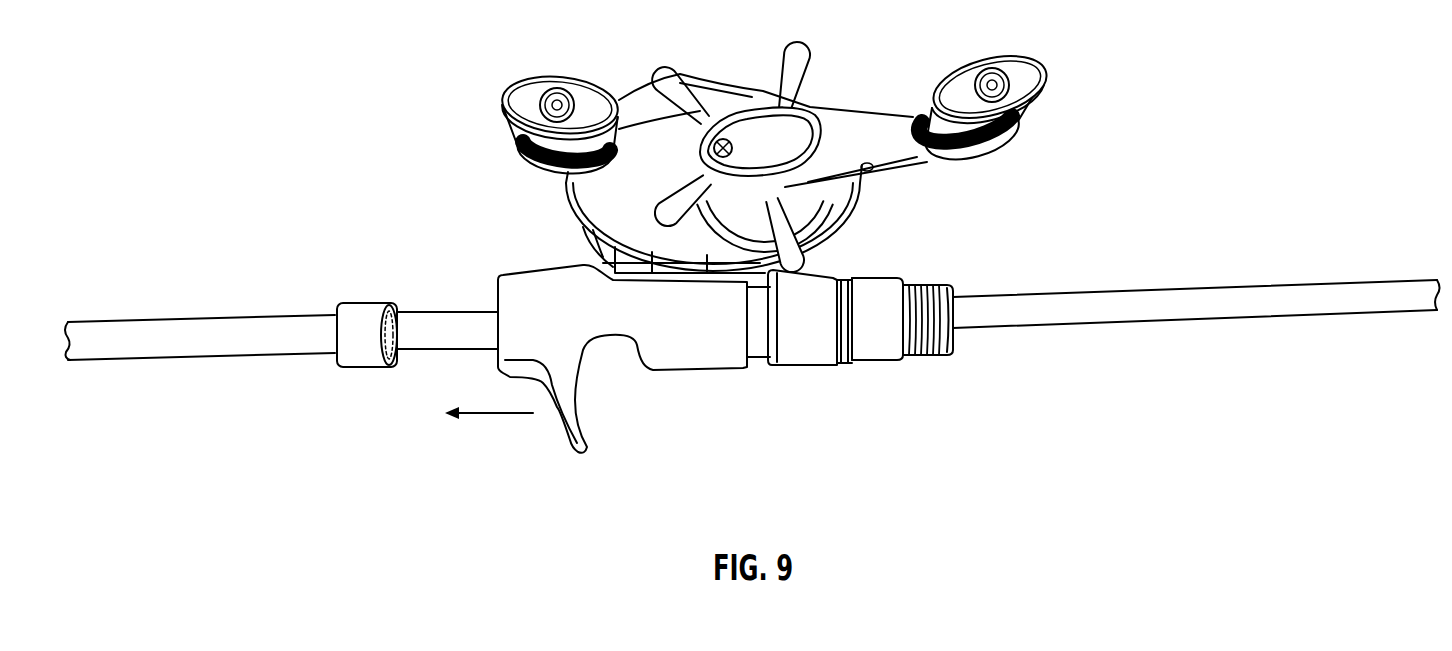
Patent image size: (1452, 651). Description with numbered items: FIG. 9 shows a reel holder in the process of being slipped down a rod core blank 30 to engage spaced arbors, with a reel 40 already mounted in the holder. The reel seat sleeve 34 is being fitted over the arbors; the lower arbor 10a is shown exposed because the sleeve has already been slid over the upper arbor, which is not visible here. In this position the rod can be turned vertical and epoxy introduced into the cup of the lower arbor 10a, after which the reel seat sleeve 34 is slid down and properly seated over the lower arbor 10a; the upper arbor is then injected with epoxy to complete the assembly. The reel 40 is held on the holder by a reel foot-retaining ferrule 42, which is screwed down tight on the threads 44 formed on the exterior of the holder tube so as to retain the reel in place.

The lower arbor 10a is at (356, 283).
The fishing rod blank 30 is at (1191, 310).
The reel seat sleeve 34 is at (931, 275).
The reel 40 is at (875, 106).
The reel foot-retaining ferrule 42 is at (868, 285).
The threads 44 is at (922, 357).